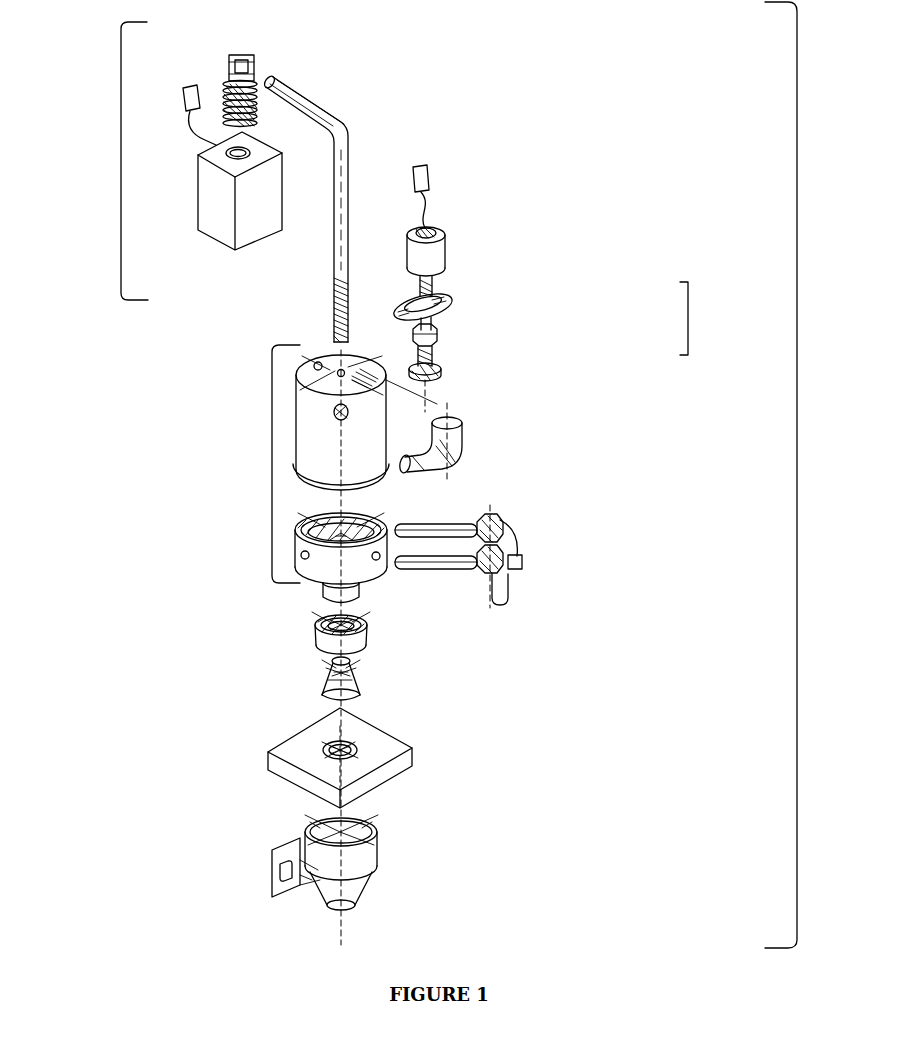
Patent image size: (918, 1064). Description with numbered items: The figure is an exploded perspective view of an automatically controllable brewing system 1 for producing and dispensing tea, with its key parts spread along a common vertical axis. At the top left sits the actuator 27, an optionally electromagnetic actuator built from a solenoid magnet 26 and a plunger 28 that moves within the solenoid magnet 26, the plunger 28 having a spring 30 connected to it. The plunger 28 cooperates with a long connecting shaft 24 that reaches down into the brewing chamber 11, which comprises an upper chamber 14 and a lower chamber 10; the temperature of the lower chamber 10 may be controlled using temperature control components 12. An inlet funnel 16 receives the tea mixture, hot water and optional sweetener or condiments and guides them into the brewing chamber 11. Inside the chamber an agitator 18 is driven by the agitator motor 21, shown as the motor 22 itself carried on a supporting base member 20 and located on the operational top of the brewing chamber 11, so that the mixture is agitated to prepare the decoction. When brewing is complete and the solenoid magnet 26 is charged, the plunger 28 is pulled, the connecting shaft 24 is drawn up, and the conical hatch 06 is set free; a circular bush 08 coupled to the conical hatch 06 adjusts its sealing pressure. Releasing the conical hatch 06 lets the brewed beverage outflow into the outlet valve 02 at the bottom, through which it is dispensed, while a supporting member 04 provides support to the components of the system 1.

The system 1 is at (797, 476).
The outlet valve 02 is at (380, 875).
The supporting member 04 is at (412, 765).
The conical hatch 06 is at (362, 685).
The bush 08 is at (378, 637).
The lower chamber 10 is at (372, 586).
The brewing chamber 11 is at (272, 465).
The temperature control components 12 is at (492, 573).
The upper chamber 14 is at (367, 477).
The inlet funnel 16 is at (462, 442).
The agitator 18 is at (440, 360).
The supporting base member 20 is at (452, 313).
The agitator motor 21 is at (688, 318).
The motor 22 is at (452, 261).
The connecting shaft 24 is at (349, 132).
The solenoid magnet 26 is at (206, 240).
The actuator 27 is at (121, 162).
The plunger 28 is at (252, 62).
The spring 30 is at (229, 76).